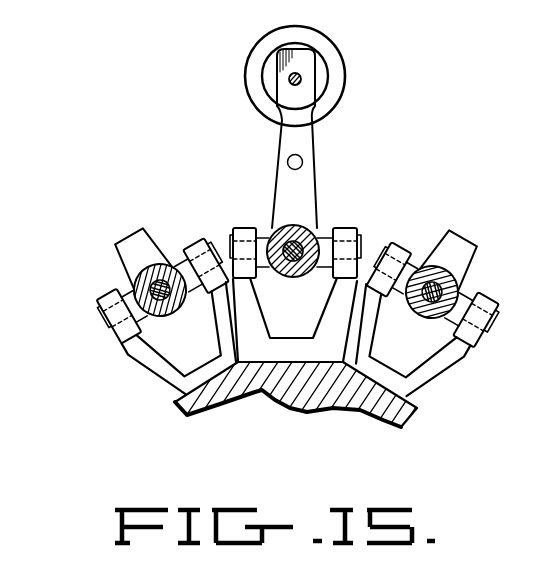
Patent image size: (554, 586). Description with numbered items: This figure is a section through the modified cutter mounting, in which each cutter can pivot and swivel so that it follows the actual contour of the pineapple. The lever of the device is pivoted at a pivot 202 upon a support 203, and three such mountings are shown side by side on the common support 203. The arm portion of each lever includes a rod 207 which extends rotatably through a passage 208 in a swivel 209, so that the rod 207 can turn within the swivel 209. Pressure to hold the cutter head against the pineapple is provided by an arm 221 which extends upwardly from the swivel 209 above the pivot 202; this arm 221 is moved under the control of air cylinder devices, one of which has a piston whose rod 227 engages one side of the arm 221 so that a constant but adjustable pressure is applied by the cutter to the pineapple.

The arm 221 is at (311, 62).
The rod 227 is at (302, 79).
The rod 207 is at (272, 229).
The passage 208 is at (314, 236).
The swivel 209 is at (322, 238).
The pivot 202 is at (234, 231).
The support 203 is at (170, 380).